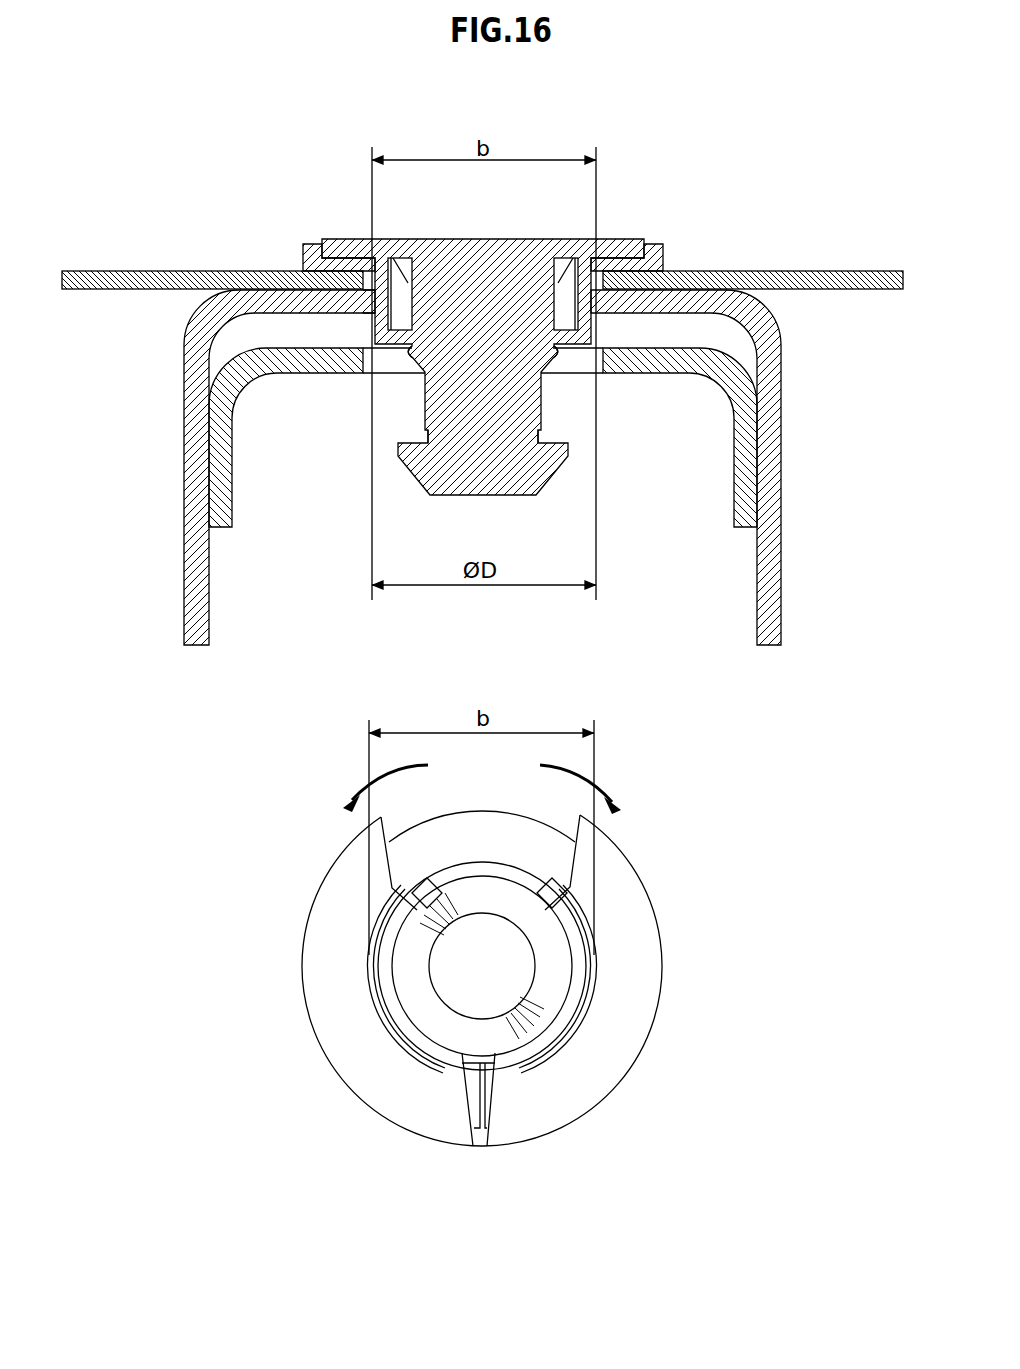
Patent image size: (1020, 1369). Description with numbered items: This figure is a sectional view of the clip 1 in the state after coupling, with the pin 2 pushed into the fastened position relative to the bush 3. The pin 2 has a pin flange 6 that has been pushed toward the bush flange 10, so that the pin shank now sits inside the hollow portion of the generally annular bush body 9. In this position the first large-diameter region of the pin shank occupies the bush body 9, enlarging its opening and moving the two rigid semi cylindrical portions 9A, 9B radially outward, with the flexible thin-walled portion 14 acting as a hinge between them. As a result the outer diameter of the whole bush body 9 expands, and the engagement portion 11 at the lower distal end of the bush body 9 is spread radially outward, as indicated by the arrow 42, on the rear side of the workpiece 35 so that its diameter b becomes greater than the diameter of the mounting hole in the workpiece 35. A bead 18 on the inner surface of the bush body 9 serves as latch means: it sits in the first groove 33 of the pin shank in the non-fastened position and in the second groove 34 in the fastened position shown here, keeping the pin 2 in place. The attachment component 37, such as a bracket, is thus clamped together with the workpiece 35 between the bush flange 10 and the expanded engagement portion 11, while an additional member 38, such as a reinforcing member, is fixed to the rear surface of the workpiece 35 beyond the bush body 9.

The clip 1 is at (681, 192).
The pin 2 is at (486, 235).
The bush 3 is at (673, 236).
The pin flange 6 is at (337, 238).
The bush body 9 is at (372, 300).
The semi cylindrical portion 9A is at (393, 1040).
The semi cylindrical portion 9B is at (587, 1017).
The bush flange 10 is at (303, 244).
The engagement portion 11 is at (372, 324).
The thin-walled portion 14 is at (487, 1068).
The bead 18 is at (423, 400).
The first groove 33 is at (542, 436).
The second groove 34 is at (410, 352).
The workpiece 35 is at (184, 375).
The attachment component 37 is at (113, 270).
The additional member 38 is at (235, 496).
The arrow 42 is at (367, 795).